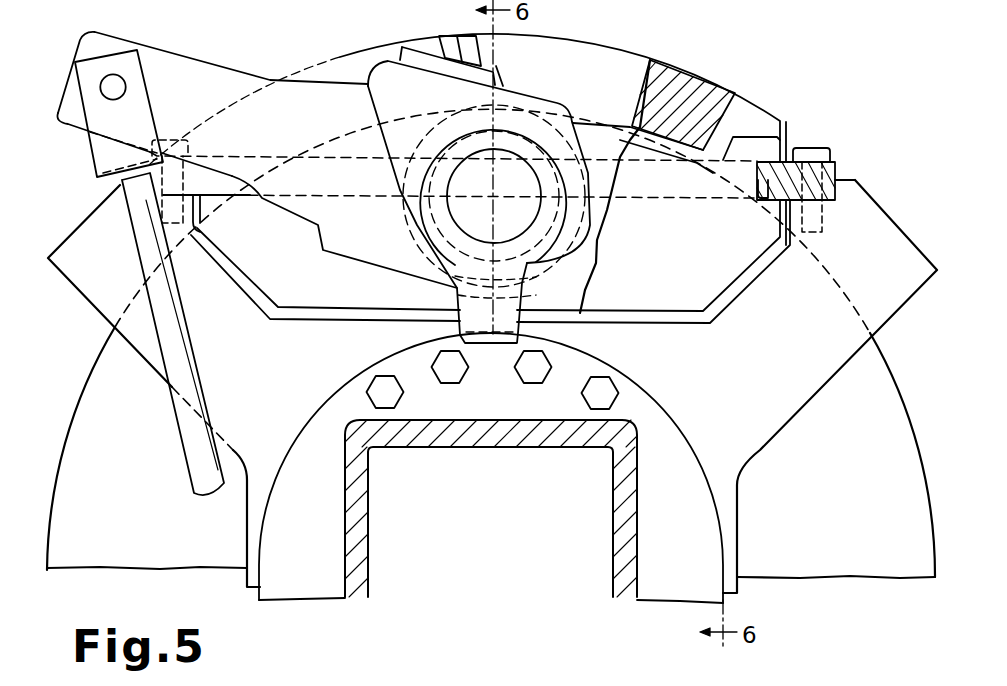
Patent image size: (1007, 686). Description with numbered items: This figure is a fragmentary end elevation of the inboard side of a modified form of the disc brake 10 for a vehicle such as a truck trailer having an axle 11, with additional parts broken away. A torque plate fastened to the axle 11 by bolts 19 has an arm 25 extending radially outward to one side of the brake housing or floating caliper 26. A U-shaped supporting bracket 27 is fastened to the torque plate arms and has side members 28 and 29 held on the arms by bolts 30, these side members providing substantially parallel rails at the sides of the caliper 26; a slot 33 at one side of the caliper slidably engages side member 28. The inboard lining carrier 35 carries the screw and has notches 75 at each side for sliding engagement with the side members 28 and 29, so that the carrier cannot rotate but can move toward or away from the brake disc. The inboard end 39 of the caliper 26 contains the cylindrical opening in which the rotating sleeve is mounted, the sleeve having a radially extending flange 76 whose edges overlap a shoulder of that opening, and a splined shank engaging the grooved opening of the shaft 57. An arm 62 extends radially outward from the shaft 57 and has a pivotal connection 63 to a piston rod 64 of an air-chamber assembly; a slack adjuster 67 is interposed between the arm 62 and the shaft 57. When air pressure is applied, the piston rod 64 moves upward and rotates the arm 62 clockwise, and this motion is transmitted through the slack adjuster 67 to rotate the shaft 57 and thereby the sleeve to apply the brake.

The disc brake 10 is at (627, 30).
The axle 11 is at (622, 518).
The bolts 19 is at (585, 396).
The arm 25 is at (893, 230).
The brake housing or floating caliper 26 is at (627, 60).
The U-shaped supporting bracket 27 is at (783, 160).
The side member 28 is at (120, 195).
The side member 29 is at (833, 173).
The bolts 30 is at (175, 140).
The slot 33 is at (215, 193).
The inboard lining carrier 35 is at (750, 147).
The inboard end of caliper 39 is at (300, 296).
The shaft 57 is at (452, 212).
The arm 62 is at (295, 88).
The pivotal connection 63 is at (107, 83).
The piston rod 64 is at (205, 462).
The slack adjuster 67 is at (393, 63).
The notches 75 is at (768, 202).
The radially extending flange 76 is at (590, 228).